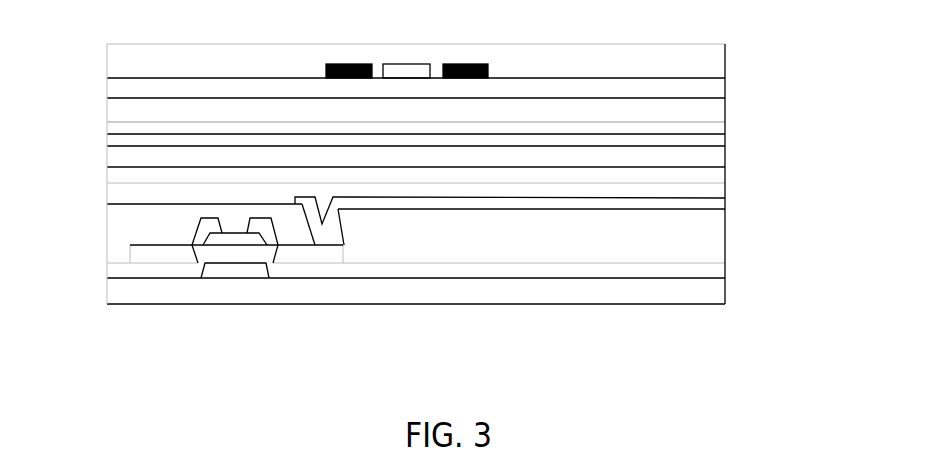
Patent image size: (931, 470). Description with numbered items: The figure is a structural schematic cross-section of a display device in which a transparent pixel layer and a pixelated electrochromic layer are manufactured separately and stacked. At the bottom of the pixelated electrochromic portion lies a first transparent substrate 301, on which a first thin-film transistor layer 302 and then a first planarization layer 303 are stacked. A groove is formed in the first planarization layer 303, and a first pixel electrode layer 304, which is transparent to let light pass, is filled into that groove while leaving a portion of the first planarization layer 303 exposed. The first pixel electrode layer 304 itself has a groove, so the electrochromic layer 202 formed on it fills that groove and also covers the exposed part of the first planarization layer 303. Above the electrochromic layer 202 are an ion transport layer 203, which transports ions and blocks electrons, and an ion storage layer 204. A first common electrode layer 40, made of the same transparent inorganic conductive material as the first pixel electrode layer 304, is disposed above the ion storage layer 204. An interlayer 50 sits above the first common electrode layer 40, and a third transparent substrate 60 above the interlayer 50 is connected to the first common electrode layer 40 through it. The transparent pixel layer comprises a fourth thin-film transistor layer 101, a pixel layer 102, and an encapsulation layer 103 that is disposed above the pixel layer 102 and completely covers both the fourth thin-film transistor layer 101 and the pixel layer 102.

The first transparent substrate 301 is at (727, 283).
The first thin-film transistor layer 302 is at (128, 255).
The first planarization layer 303 is at (107, 217).
The first pixel electrode layer 304 is at (727, 201).
The electrochromic layer 202 is at (727, 192).
The ion transport layer 203 is at (727, 174).
The ion storage layer 204 is at (725, 155).
The first common electrode layer 40 is at (107, 141).
The interlayer 50 is at (107, 128).
The third transparent substrate 60 is at (725, 112).
The fourth thin-film transistor layer 101 is at (107, 88).
The pixel layer 102 is at (352, 63).
The encapsulation layer 103 is at (107, 62).